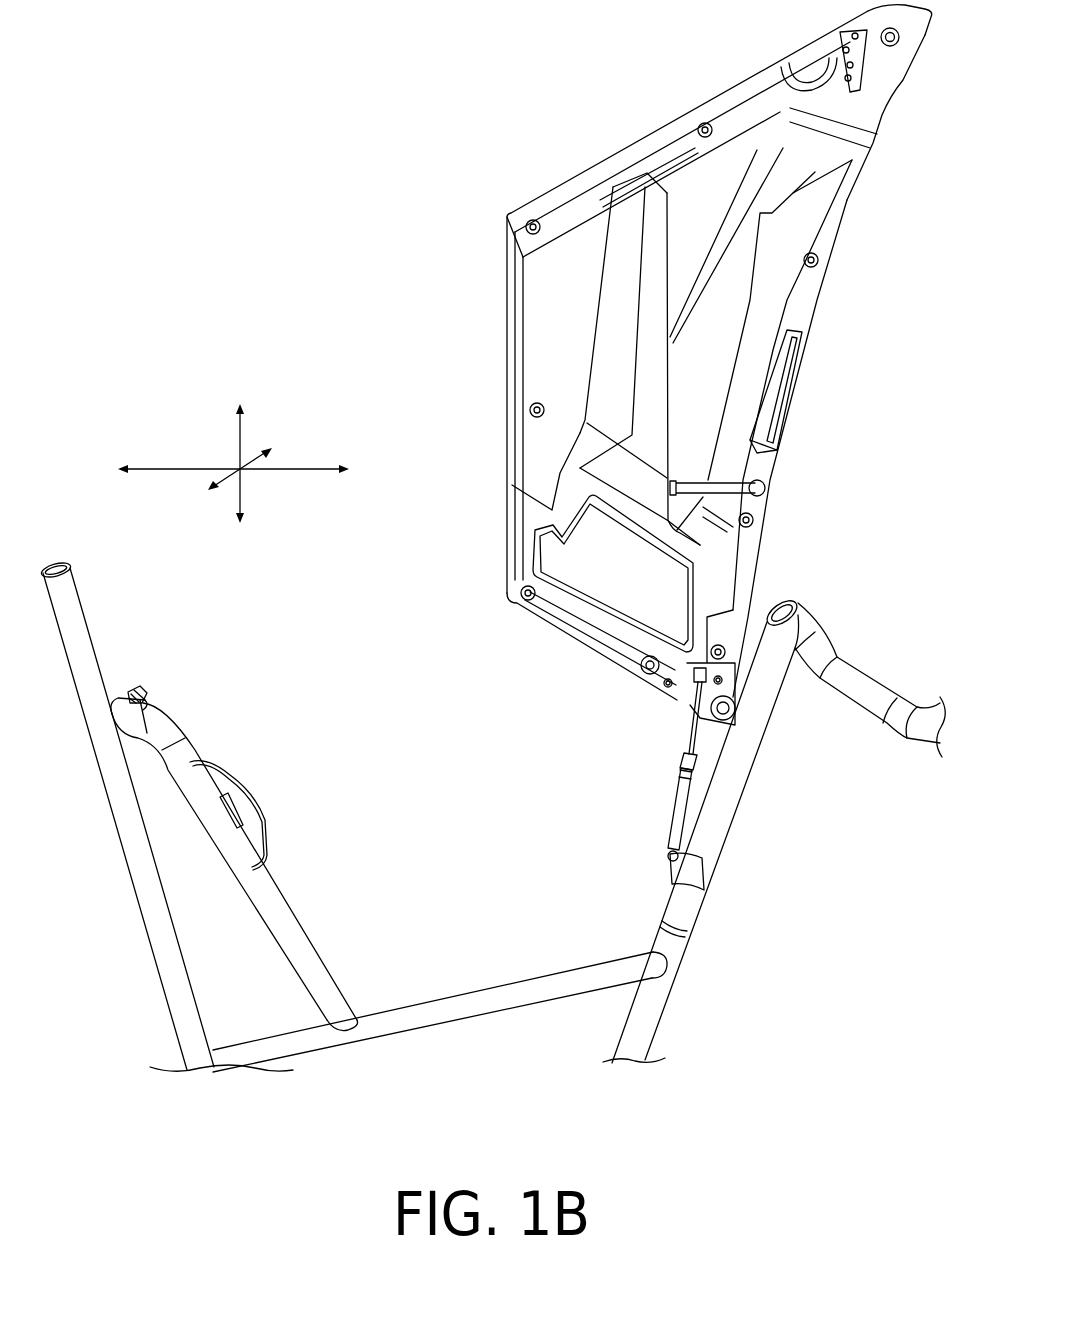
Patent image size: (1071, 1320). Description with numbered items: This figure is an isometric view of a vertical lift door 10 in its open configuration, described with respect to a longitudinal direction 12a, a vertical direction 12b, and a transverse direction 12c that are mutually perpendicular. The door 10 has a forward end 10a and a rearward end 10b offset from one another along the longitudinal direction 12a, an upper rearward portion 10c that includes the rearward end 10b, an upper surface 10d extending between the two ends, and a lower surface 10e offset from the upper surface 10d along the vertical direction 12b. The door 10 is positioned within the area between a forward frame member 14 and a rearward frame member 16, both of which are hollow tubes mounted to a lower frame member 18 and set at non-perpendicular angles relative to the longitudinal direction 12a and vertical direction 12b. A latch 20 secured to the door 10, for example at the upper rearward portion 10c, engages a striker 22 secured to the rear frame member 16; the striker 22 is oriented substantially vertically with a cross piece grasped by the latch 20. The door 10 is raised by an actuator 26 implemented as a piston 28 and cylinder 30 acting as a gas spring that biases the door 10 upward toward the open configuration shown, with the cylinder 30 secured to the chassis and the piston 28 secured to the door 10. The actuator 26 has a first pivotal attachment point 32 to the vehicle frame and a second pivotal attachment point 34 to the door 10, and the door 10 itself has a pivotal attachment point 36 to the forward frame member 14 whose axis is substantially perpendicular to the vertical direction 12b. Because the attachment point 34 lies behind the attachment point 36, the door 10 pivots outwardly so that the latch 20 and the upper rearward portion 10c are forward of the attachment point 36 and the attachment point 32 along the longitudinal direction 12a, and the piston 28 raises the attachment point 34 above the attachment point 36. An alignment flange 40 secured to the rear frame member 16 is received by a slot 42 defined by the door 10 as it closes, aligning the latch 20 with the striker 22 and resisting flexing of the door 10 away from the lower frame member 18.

The vertical lift door 10 is at (548, 350).
The forward end 10a is at (703, 720).
The rearward end 10b is at (931, 17).
The upper rearward portion 10c is at (883, 72).
The upper surface 10d is at (818, 312).
The lower surface 10e is at (507, 283).
The longitudinal direction 12a is at (310, 469).
The vertical direction 12b is at (240, 437).
The transverse direction 12c is at (222, 480).
The forward frame member 14 is at (730, 780).
The rearward frame member 16 is at (230, 842).
The lower frame member 18 is at (445, 1010).
The latch 20 is at (827, 62).
The striker 22 is at (146, 693).
The actuator 26 is at (656, 783).
The piston 28 is at (693, 733).
The cylinder 30 is at (683, 783).
The first pivotal attachment point 32 is at (672, 867).
The second pivotal attachment point 34 is at (643, 683).
The pivotal attachment point 36 is at (735, 708).
The alignment flange 40 is at (223, 770).
The slot 42 is at (672, 163).